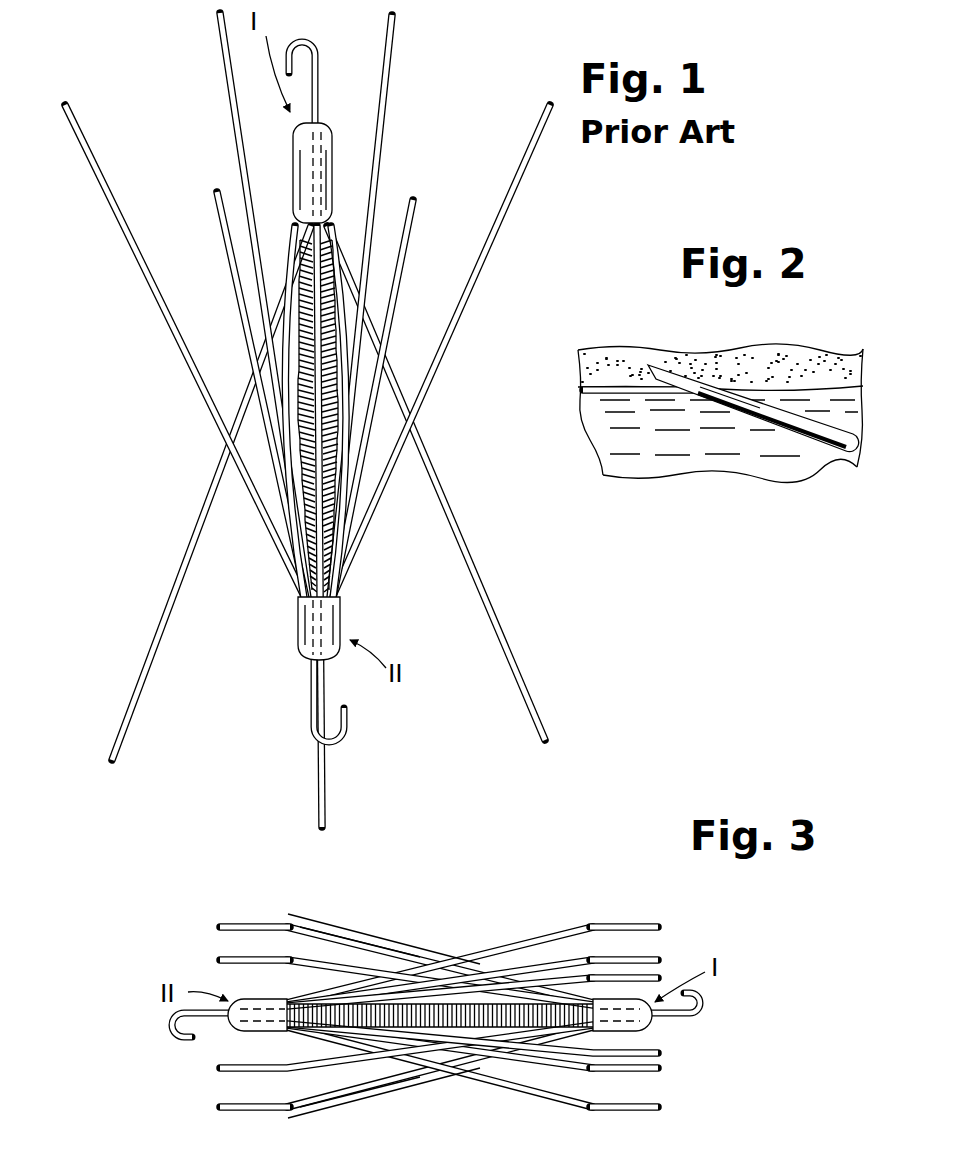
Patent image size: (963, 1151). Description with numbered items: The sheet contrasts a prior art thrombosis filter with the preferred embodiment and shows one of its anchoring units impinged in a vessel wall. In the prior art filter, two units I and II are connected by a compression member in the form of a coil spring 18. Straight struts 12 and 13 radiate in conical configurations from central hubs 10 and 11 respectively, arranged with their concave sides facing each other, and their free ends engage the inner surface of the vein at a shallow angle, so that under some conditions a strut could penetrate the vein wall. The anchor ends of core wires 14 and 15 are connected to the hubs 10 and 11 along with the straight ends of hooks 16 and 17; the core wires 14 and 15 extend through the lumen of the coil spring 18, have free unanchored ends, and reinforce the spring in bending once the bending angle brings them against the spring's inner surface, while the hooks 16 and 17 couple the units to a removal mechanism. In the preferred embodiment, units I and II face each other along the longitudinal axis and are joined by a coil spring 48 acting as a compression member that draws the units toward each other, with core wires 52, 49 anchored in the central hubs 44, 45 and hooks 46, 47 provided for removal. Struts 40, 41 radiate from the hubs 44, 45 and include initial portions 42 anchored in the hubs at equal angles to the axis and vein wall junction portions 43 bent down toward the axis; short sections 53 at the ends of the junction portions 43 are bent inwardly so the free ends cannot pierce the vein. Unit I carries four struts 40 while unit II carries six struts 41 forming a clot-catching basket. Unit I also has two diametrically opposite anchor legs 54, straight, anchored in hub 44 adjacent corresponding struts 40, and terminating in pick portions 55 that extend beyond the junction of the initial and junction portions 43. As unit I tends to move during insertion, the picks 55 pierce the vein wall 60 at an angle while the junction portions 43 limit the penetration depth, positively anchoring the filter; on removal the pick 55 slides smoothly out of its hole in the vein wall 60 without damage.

In FIG. 1, the central hub 10 is at (334, 128).
In FIG. 1, the central hub 11 is at (298, 615).
In FIG. 1, the struts 12 is at (317, 743).
In FIG. 1, the struts 13 is at (232, 100).
In FIG. 1, the core wire 14 is at (310, 283).
In FIG. 1, the core wire 15 is at (340, 510).
In FIG. 1, the hook 16 is at (322, 44).
In FIG. 1, the hook 17 is at (338, 740).
In FIG. 1, the coil spring 18 is at (349, 277).
In FIG. 3, the struts 40 is at (214, 921).
In FIG. 3, the struts 41 is at (663, 922).
In FIG. 2, the initial portions 42 is at (790, 432).
In FIG. 3, the initial portions 42 is at (310, 935).
In FIG. 2, the vein wall junction portions 43 is at (648, 398).
In FIG. 3, the vein wall junction portions 43 is at (257, 918).
In FIG. 3, the central hub 44 is at (652, 1030).
In FIG. 3, the central hub 45 is at (235, 1032).
In FIG. 3, the hook 46 is at (700, 1005).
In FIG. 3, the hook 47 is at (172, 1025).
In FIG. 3, the coil spring 48 is at (415, 1000).
In FIG. 3, the core wire 49 is at (325, 1040).
In FIG. 3, the core wire 52 is at (562, 1055).
In FIG. 3, the short sections 53 is at (220, 958).
In FIG. 2, the anchor legs 54 is at (822, 427).
In FIG. 3, the anchor legs 54 is at (365, 930).
In FIG. 2, the pick portions 55 is at (677, 370).
In FIG. 3, the pick portions 55 is at (308, 887).
In FIG. 2, the vein wall 60 is at (786, 370).